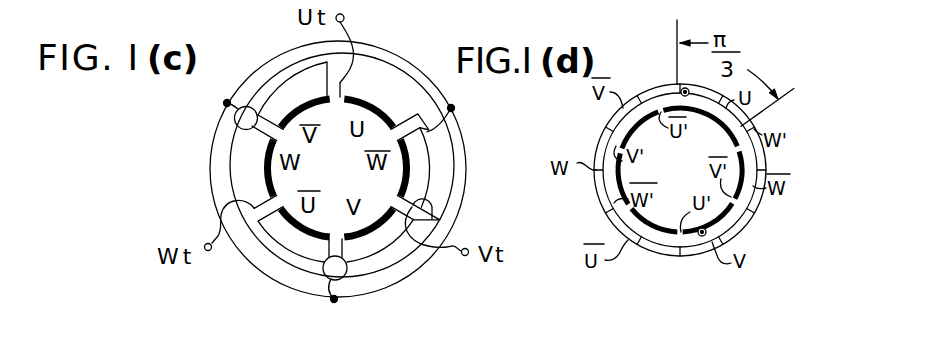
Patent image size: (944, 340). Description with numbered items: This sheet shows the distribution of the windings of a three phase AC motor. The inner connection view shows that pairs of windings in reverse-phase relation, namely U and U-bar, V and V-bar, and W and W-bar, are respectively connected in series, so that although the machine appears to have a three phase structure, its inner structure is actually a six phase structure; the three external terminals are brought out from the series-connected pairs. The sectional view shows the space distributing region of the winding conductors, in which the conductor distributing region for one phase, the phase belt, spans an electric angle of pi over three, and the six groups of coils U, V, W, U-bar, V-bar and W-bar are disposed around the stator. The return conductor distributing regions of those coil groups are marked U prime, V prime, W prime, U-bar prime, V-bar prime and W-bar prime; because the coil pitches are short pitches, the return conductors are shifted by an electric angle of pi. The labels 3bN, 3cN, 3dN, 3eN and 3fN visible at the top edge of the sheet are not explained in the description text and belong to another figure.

The winding coil 3bN is at (424, 10).
The winding coil 3cN is at (475, 10).
The winding coil 3dN is at (527, 10).
The winding coil 3eN is at (576, 10).
The winding coil 3fN is at (623, 10).